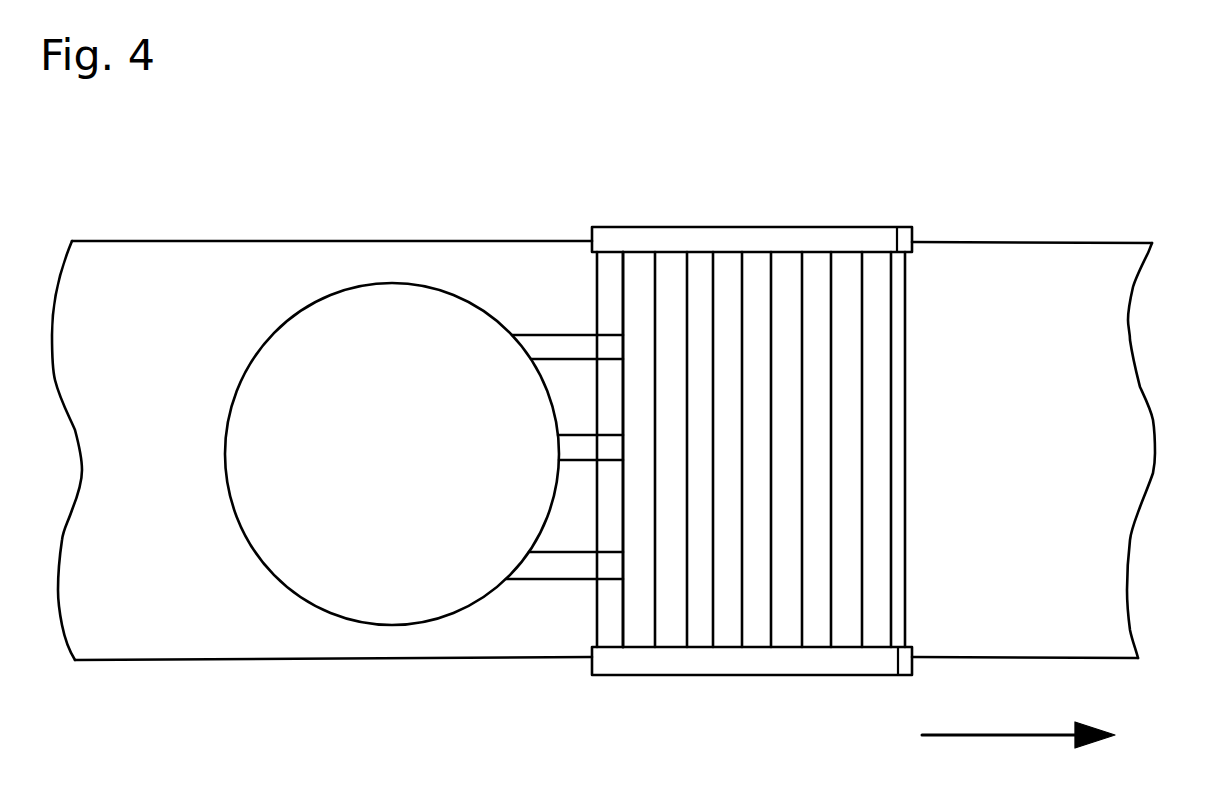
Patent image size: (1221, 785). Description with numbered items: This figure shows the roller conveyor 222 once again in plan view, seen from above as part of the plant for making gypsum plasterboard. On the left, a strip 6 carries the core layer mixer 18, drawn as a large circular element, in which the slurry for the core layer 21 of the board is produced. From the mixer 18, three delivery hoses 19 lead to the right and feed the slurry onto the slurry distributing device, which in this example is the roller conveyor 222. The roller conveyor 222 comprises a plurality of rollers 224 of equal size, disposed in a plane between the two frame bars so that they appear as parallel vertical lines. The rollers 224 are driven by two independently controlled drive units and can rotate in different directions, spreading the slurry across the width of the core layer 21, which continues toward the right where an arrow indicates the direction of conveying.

The carrier strip 6 is at (155, 258).
The core layer mixer 18 is at (470, 325).
The delivery hose 19 is at (606, 343).
The core layer 21 is at (1118, 380).
The roller conveyor 222 is at (770, 240).
The rollers 224 is at (673, 263).